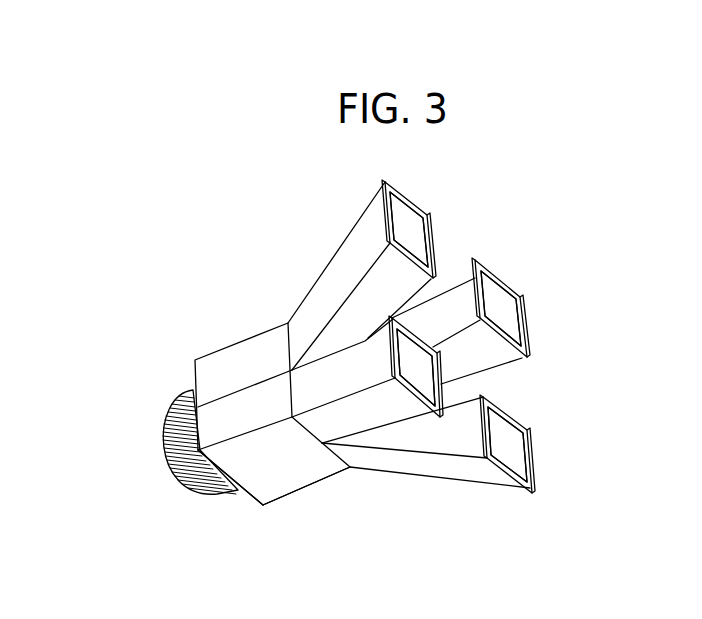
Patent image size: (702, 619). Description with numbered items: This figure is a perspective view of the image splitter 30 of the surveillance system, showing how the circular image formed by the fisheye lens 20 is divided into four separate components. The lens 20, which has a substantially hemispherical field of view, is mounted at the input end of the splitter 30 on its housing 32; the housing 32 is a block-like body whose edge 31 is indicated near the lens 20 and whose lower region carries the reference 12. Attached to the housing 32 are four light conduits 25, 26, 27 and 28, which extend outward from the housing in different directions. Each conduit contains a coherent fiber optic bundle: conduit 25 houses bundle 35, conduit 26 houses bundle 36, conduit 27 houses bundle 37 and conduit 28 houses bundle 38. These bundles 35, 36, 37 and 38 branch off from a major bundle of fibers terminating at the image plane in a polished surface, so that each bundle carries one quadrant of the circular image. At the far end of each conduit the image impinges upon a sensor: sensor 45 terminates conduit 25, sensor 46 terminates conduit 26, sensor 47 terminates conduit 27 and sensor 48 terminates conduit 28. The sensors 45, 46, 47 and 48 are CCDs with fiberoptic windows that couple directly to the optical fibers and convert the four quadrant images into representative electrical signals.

The optical device / light source apparatus 12 is at (178, 500).
The lens 20 is at (188, 391).
The light conduit 25 is at (340, 255).
The light conduit 26 is at (450, 288).
The light conduit 27 is at (468, 403).
The light conduit 28 is at (313, 388).
The splitter 30 is at (317, 475).
The edge of housing 31 is at (243, 495).
The housing 32 is at (278, 321).
The coherent fiber optic bundle 35 is at (408, 227).
The coherent fiber optic bundle 36 is at (498, 302).
The coherent fiber optic bundle 37 is at (504, 433).
The coherent fiber optic bundle 38 is at (418, 378).
The sensor 45 is at (403, 190).
The sensor 46 is at (525, 320).
The sensor 47 is at (533, 457).
The sensor 48 is at (440, 409).